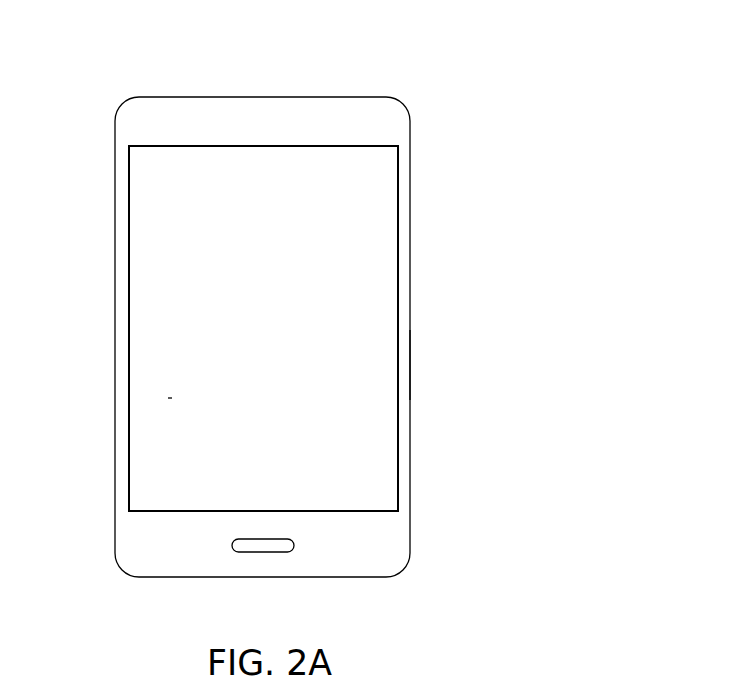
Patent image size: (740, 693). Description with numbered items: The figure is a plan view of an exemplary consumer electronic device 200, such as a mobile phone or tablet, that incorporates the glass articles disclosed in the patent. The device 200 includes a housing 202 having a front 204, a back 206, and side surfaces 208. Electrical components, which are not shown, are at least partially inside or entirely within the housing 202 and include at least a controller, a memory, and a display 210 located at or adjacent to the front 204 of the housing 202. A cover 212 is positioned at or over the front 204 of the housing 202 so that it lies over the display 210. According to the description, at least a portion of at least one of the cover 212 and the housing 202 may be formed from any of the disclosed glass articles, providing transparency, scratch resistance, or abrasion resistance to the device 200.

The consumer electronic device 200 is at (473, 77).
The housing 202 is at (126, 136).
The front surface 204 is at (388, 551).
The back surface 206 is at (172, 284).
The side surfaces 208 is at (412, 362).
The display 210 is at (371, 243).
The cover 212 is at (170, 398).